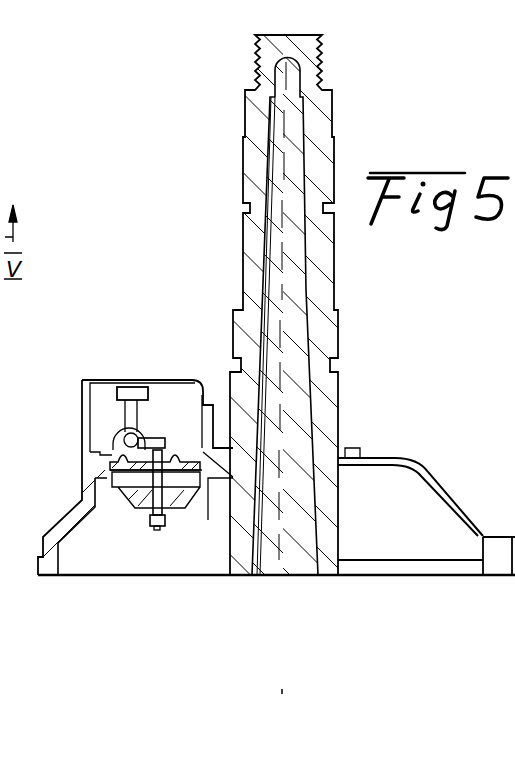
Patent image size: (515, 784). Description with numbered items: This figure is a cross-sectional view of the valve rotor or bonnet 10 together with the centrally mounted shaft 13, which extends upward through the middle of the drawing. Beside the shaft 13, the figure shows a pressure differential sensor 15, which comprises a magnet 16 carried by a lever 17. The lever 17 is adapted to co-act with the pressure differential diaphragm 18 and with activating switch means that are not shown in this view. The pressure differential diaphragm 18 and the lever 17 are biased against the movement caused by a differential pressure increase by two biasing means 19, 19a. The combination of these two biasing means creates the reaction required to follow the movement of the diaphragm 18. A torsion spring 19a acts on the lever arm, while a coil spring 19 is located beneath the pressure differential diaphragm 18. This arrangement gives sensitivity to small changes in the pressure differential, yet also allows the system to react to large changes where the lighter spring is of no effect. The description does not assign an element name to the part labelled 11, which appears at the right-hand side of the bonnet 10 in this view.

The valve rotor or bonnet 10 is at (405, 458).
The support block 11 is at (437, 508).
The centrally mounted shaft 13 is at (250, 260).
The pressure differential sensor 15 is at (63, 408).
The magnet 16 is at (134, 392).
The lever 17 is at (125, 428).
The pressure differential diaphragm 18 is at (112, 457).
The biasing means (coil spring) 19 is at (150, 512).
The biasing means (torsion spring) 19a is at (138, 443).